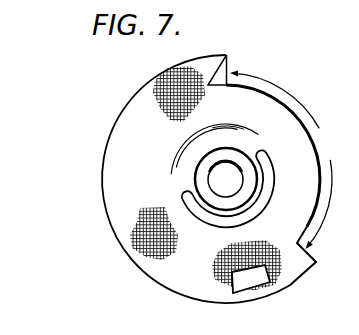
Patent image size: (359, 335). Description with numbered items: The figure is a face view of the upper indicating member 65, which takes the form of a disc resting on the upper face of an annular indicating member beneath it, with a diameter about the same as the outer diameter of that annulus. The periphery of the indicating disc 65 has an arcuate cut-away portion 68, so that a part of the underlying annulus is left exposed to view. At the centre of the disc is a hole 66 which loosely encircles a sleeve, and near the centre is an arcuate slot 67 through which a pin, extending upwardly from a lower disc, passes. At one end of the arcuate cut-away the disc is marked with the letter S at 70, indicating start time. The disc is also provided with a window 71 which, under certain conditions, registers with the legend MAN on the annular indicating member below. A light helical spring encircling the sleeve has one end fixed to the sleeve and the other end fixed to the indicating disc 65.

The indicating member 65 is at (110, 174).
The hole 66 is at (220, 171).
The arcuate slot 67 is at (182, 198).
The arcuate cut-away portion 68 is at (289, 159).
The letter S marking 70 is at (230, 59).
The window 71 is at (258, 277).